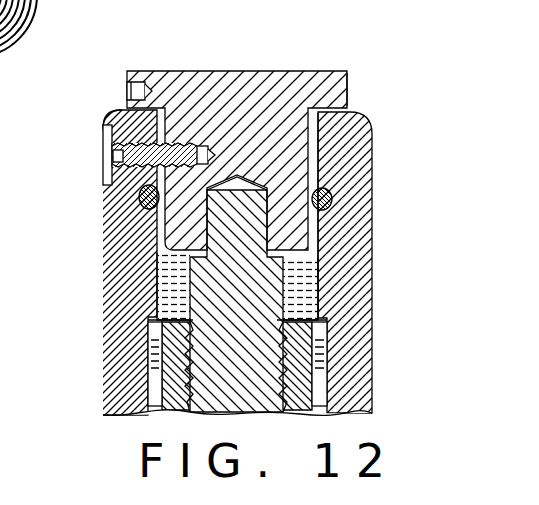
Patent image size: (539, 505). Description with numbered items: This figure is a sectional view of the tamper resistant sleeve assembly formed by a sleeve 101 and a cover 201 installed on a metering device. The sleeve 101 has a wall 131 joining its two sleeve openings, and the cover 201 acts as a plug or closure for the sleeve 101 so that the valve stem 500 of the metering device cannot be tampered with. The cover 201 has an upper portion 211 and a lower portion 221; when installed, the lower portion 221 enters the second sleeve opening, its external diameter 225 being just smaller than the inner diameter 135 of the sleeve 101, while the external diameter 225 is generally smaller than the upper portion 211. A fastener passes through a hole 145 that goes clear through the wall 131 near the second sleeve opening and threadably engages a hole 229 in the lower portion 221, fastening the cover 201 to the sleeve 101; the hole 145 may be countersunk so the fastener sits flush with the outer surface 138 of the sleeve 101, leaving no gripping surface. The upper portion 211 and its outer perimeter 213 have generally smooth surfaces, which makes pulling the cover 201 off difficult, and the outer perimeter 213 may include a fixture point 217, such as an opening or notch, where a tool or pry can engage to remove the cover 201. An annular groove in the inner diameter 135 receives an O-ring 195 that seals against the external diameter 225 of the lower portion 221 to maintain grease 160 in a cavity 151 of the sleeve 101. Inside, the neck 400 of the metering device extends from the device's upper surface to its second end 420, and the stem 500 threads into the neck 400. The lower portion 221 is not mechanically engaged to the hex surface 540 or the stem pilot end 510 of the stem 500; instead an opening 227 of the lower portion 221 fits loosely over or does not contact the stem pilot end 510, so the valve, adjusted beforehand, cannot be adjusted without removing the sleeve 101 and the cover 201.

The sleeve 101 is at (372, 148).
The wall 131 is at (103, 225).
The inner diameter 135 is at (103, 256).
The outer surface 138 is at (103, 193).
The hole 145 is at (103, 128).
The cavity 151 is at (148, 329).
The grease 160 is at (170, 297).
The O-ring 195 is at (103, 161).
The cover 201 is at (252, 83).
The upper portion 211 is at (307, 80).
The outer perimeter 213 is at (347, 92).
The fixture point 217 is at (127, 87).
The lower portion 221 is at (368, 121).
The external diameter 225 is at (318, 234).
The opening 227 is at (322, 266).
The hole 229 is at (170, 146).
The neck 400 is at (250, 375).
The second end 420 is at (322, 328).
The stem 500 is at (292, 358).
The stem pilot end 510 is at (333, 196).
The hex surface 540 is at (283, 291).